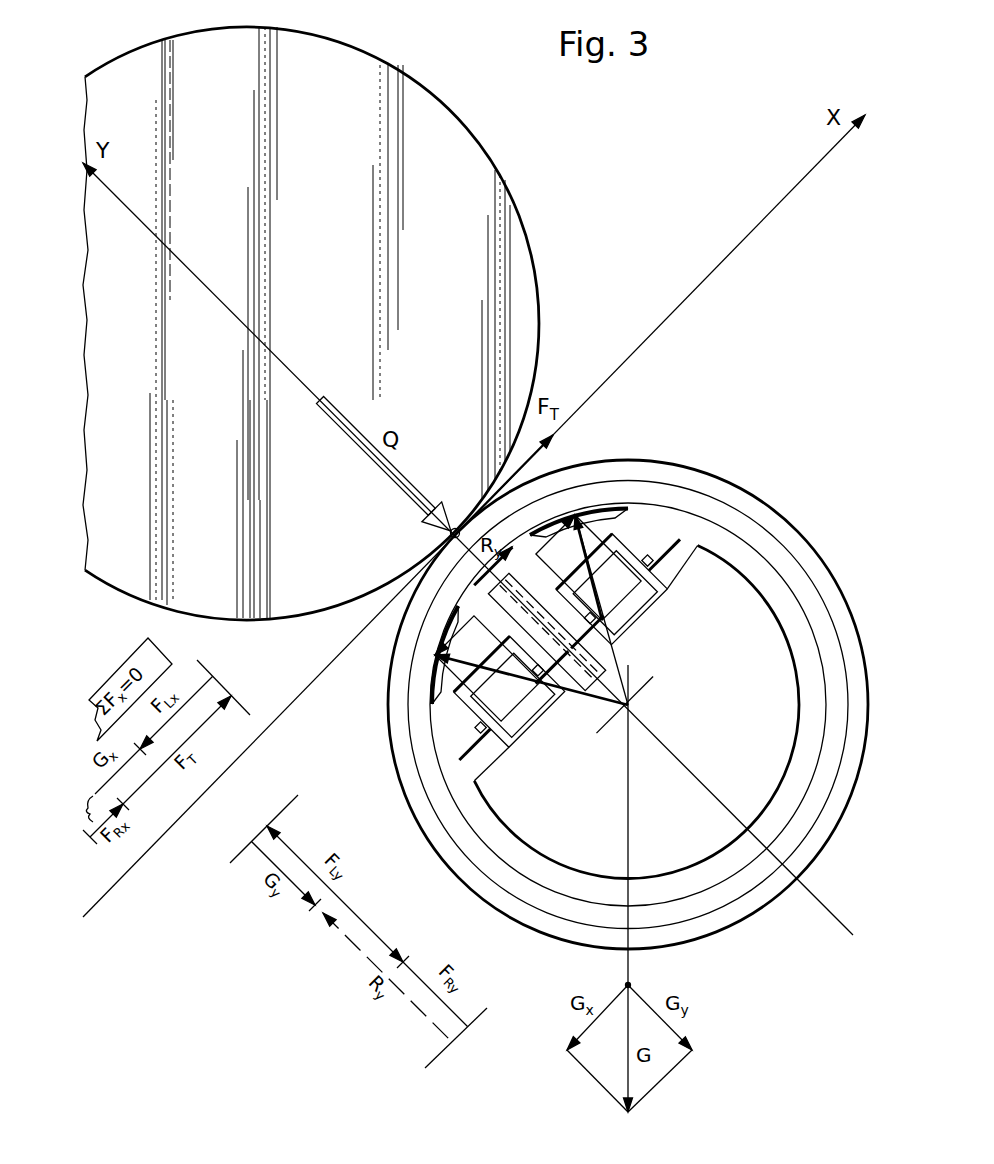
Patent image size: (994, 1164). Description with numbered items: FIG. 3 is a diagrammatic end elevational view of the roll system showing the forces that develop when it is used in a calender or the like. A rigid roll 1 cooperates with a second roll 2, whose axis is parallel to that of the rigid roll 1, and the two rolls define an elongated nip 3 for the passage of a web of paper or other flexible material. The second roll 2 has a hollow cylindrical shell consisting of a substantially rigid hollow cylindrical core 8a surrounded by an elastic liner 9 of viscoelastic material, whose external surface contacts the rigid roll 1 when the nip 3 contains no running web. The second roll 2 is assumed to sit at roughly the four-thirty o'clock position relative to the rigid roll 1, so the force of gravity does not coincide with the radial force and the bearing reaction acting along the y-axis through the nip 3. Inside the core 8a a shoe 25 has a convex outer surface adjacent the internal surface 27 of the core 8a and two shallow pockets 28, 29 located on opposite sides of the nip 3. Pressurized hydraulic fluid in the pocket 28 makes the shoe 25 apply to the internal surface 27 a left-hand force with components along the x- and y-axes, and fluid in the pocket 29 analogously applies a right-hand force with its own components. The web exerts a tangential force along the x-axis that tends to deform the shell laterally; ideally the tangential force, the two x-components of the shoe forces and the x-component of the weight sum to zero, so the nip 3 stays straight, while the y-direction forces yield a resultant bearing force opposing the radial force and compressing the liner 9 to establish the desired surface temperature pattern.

The rigid roll 1 is at (540, 323).
The second roll 2 is at (693, 464).
The nip 3 is at (428, 558).
The elastic liner 9 is at (748, 503).
The hollow cylindrical core 8a is at (773, 552).
The shoe 25 is at (450, 713).
The internal surface 27 is at (825, 727).
The pocket 28 is at (438, 675).
The pocket 29 is at (602, 510).